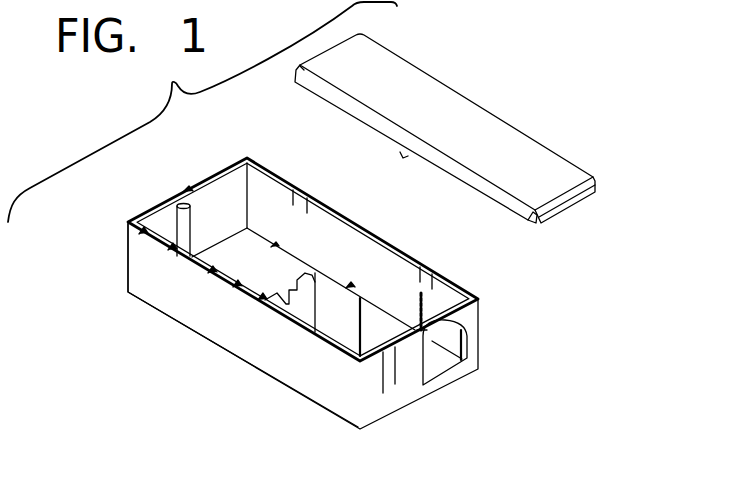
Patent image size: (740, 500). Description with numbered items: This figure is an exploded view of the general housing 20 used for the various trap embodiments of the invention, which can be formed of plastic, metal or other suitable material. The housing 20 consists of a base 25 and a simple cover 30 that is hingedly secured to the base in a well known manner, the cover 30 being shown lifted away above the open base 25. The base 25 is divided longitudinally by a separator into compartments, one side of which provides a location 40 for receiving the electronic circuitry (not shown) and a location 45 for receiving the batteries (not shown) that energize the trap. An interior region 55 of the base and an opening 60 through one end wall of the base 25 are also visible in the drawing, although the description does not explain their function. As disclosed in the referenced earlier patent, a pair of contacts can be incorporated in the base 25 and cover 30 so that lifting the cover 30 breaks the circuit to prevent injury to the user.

The housing 20 is at (188, 381).
The base 25 is at (184, 299).
The cover 30 is at (481, 131).
The compartment for electronic circuitry 40 is at (207, 233).
The compartment for batteries 45 is at (340, 316).
The interior compartment 55 is at (383, 272).
The opening 60 is at (448, 361).